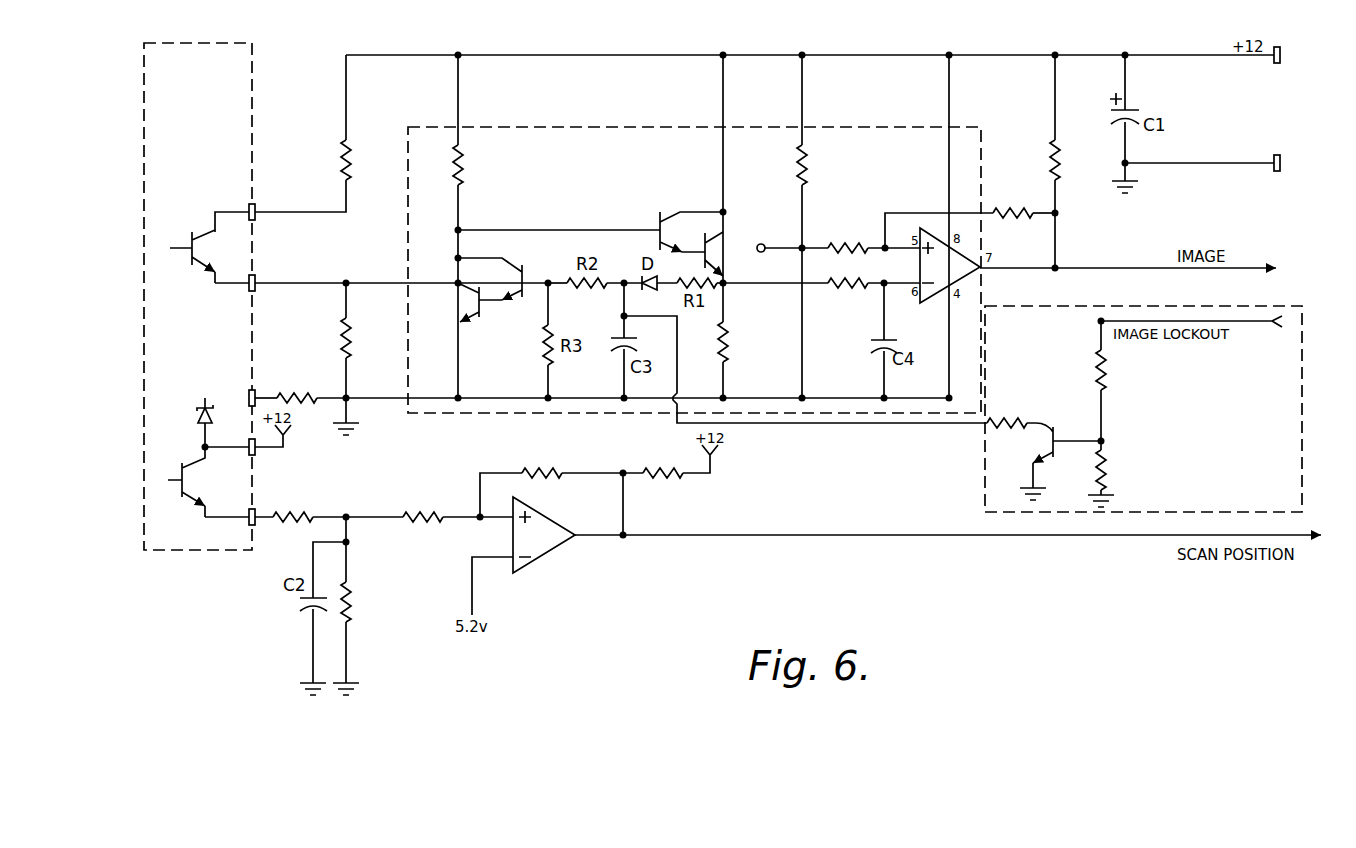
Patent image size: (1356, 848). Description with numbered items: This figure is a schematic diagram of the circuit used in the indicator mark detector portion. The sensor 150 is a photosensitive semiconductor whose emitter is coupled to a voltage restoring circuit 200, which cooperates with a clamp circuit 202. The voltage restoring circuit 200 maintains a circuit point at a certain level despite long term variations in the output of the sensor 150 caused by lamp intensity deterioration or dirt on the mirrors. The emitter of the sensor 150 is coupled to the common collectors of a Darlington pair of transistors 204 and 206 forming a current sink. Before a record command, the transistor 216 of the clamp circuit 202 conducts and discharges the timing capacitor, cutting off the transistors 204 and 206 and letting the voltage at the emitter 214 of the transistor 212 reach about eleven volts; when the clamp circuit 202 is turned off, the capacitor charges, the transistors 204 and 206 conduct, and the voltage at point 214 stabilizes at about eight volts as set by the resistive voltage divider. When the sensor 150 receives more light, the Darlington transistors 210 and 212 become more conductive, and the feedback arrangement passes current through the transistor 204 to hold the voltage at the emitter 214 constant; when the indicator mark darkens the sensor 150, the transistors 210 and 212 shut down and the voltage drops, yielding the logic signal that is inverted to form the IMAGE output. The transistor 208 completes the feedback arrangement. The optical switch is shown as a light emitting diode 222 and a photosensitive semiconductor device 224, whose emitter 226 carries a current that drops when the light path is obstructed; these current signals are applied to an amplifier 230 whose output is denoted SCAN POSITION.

The sensor 150 is at (187, 282).
The voltage restoring circuit 200 is at (850, 125).
The clamp circuit 202 is at (982, 483).
The transistor 204 is at (462, 308).
The transistor 206 is at (518, 256).
The transistor 208 is at (640, 230).
The transistor 210 is at (668, 212).
The transistor 212 is at (728, 240).
The emitter 214 is at (724, 274).
The transistor 216 is at (1062, 431).
The light emitting diode 222 is at (198, 415).
The photosensitive semiconductor device 224 is at (172, 497).
The emitter 226 is at (213, 524).
The amplifier 230 is at (556, 548).